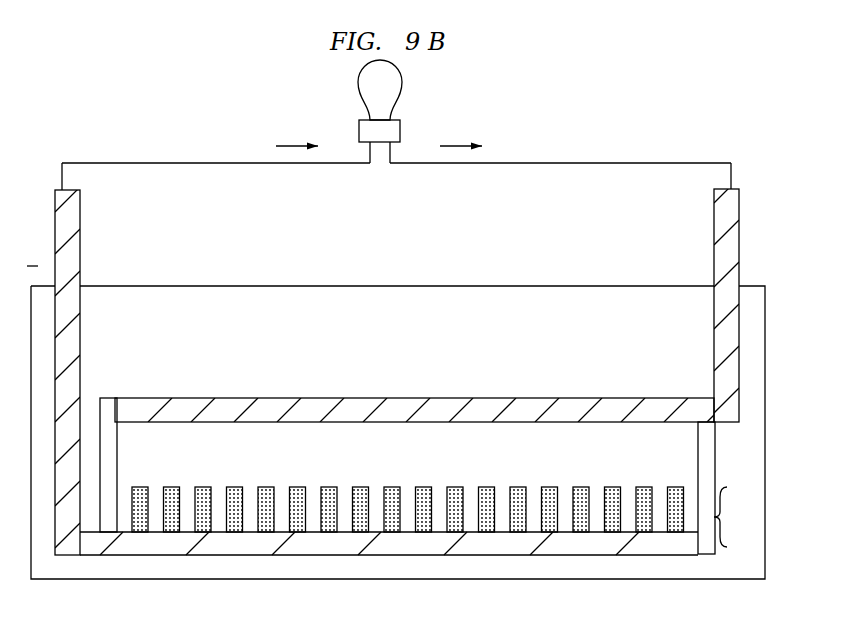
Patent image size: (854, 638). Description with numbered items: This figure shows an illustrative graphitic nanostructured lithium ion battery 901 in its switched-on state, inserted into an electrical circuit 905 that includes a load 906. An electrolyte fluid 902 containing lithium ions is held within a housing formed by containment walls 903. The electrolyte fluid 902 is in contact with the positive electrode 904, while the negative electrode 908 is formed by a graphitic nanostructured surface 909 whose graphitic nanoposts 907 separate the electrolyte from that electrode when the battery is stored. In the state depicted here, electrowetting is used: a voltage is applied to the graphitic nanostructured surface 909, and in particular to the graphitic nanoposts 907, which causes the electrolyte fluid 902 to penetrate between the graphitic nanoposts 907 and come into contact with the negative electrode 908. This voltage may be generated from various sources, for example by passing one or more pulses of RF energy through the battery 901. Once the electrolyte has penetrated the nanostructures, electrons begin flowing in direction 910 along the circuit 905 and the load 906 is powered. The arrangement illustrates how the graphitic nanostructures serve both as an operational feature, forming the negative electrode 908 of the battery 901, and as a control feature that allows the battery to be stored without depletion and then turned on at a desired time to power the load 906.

The battery 901 is at (766, 343).
The electrolyte fluid 902 is at (555, 422).
The containment walls 903 is at (106, 397).
The positive electrode 904 is at (740, 220).
The electrical circuit 905 is at (524, 163).
The load 906 is at (401, 88).
The graphitic nanoposts 907 is at (266, 533).
The negative electrode 908 is at (80, 236).
The graphitic nanostructured surface 909 is at (742, 517).
The direction 910 is at (290, 146).